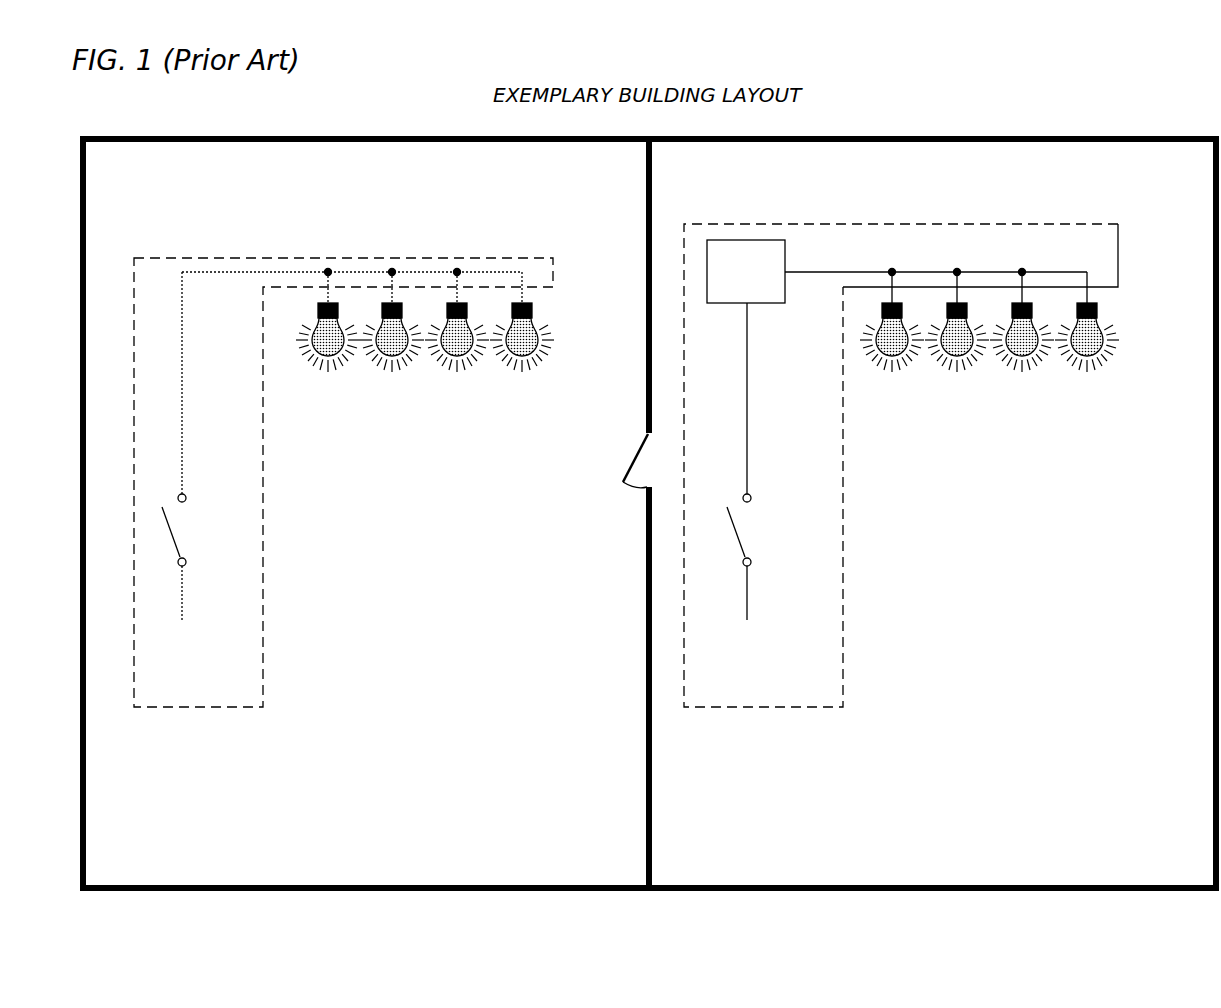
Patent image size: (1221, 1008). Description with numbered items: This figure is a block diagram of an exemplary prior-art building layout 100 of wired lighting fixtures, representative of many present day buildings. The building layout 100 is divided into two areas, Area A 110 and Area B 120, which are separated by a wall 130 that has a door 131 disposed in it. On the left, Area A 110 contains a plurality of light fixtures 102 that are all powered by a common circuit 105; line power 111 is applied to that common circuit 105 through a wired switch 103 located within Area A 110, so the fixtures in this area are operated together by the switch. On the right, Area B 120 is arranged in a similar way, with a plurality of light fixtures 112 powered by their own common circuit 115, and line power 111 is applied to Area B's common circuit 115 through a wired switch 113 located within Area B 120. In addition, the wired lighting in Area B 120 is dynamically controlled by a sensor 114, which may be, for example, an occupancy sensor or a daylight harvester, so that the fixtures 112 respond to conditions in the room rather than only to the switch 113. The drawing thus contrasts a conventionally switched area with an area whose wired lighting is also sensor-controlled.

The building layout 100 is at (1138, 104).
The light fixtures 102 is at (568, 337).
The wired switch 103 is at (196, 531).
The common circuit 105 is at (297, 257).
The Area A 110 is at (391, 783).
The line power 111 is at (464, 665).
The light fixtures 112 is at (1140, 337).
The wired switch 113 is at (761, 531).
The sensor 114 is at (746, 271).
The common circuit 115 is at (908, 223).
The Area B 120 is at (924, 783).
The wall 130 is at (652, 806).
The door 131 is at (640, 447).